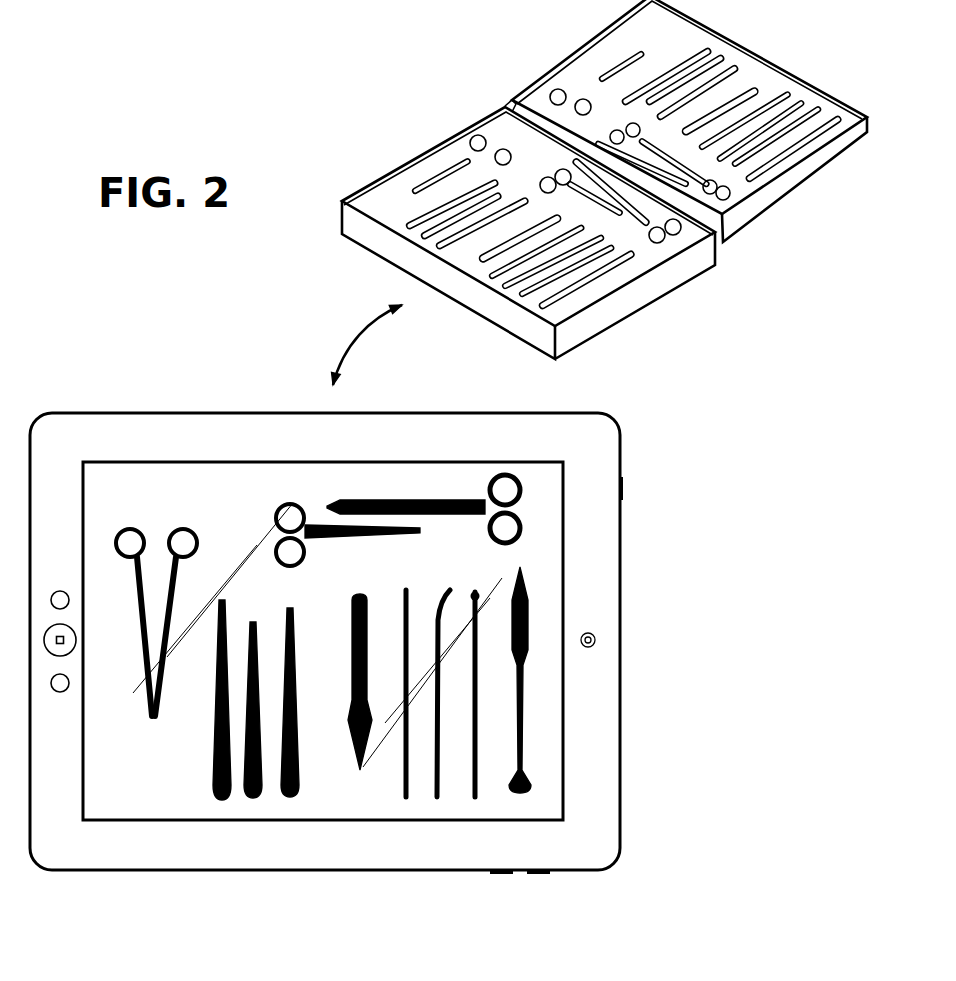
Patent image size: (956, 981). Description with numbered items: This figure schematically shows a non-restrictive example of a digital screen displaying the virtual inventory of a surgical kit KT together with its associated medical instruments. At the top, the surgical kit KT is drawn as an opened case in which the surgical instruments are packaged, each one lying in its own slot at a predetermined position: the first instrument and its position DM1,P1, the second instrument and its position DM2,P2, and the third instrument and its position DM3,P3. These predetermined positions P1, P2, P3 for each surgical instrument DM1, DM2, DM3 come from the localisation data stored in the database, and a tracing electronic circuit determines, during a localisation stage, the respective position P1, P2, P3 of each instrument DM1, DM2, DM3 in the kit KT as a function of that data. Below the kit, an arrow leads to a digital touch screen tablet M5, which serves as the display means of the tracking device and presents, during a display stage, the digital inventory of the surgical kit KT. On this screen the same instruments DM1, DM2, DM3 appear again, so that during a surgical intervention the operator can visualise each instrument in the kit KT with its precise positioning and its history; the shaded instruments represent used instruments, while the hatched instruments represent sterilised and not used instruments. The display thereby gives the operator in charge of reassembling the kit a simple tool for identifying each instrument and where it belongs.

The surgical kit KT is at (408, 152).
The surgical instrument at predetermined position DM1,P1 is at (633, 521).
The surgical instrument DM1 is at (633, 521).
The predetermined position P1 is at (617, 283).
The surgical instrument at predetermined position DM2,P2 is at (527, 598).
The surgical instrument DM2 is at (527, 598).
The predetermined position P2 is at (527, 303).
The surgical instrument at predetermined position DM3,P3 is at (520, 367).
The surgical instrument DM3 is at (520, 367).
The predetermined position P3 is at (678, 242).
The display device (tablet) M5 is at (121, 870).